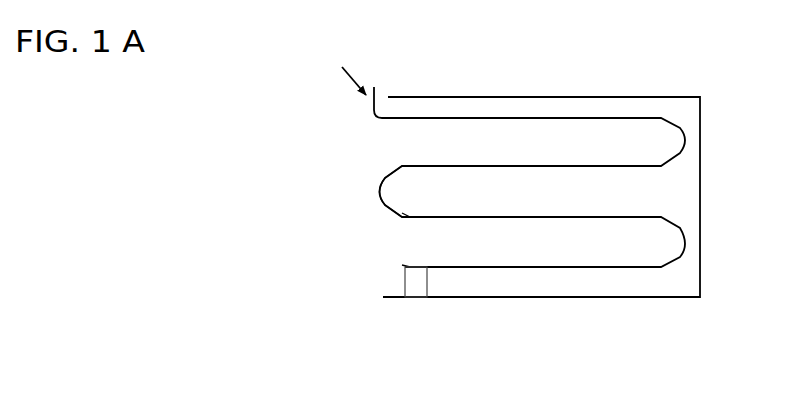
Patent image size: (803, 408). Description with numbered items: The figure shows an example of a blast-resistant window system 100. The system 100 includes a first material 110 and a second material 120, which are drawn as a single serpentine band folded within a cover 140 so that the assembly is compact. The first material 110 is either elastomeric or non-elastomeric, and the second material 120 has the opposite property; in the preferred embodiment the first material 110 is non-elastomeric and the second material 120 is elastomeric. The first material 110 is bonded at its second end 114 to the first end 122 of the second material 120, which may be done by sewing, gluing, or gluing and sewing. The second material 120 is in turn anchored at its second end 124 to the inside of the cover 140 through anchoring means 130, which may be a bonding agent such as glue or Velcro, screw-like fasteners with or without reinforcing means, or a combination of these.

The blast-resistant window system 100 is at (249, 338).
The first material 110 is at (548, 118).
The second end 114 is at (391, 220).
The second material 120 is at (530, 267).
The first end 122 is at (409, 212).
The second end 124 is at (409, 260).
The anchoring means 130 is at (405, 282).
The cover 140 is at (700, 186).